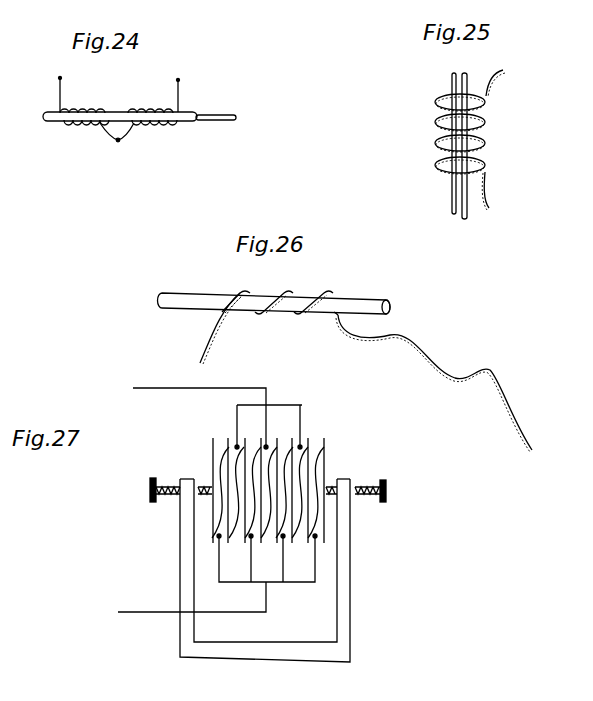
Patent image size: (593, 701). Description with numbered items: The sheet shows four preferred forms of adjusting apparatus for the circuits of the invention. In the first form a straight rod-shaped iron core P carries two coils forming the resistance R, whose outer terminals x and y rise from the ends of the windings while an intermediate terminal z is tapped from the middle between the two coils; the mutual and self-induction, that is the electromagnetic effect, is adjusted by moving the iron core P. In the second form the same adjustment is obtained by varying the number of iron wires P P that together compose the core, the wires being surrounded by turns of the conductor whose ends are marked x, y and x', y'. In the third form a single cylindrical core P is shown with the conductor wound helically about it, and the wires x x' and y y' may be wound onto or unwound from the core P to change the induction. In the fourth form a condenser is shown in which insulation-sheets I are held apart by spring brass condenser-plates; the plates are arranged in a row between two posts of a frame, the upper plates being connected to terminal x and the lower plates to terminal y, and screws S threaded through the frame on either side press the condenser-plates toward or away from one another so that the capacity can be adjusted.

In FIG. 24, the iron core P is at (185, 123).
In FIG. 25, the iron core P is at (450, 154).
In FIG. 26, the iron core P is at (274, 295).
In FIG. 24, the resistance R is at (118, 108).
In FIG. 24, the terminal x is at (52, 88).
In FIG. 25, the terminal x is at (472, 117).
In FIG. 26, the terminal x is at (356, 371).
In FIG. 27, the terminal x is at (217, 418).
In FIG. 24, the terminal y is at (186, 90).
In FIG. 25, the terminal y is at (476, 75).
In FIG. 26, the terminal y is at (379, 402).
In FIG. 27, the terminal y is at (217, 573).
In FIG. 24, the intermediate terminal z is at (117, 142).
In FIG. 25, the wire end x' is at (497, 193).
In FIG. 25, the wire end y' is at (476, 228).
In FIG. 27, the insulation-sheet I is at (326, 455).
In FIG. 27, the screw S is at (150, 488).